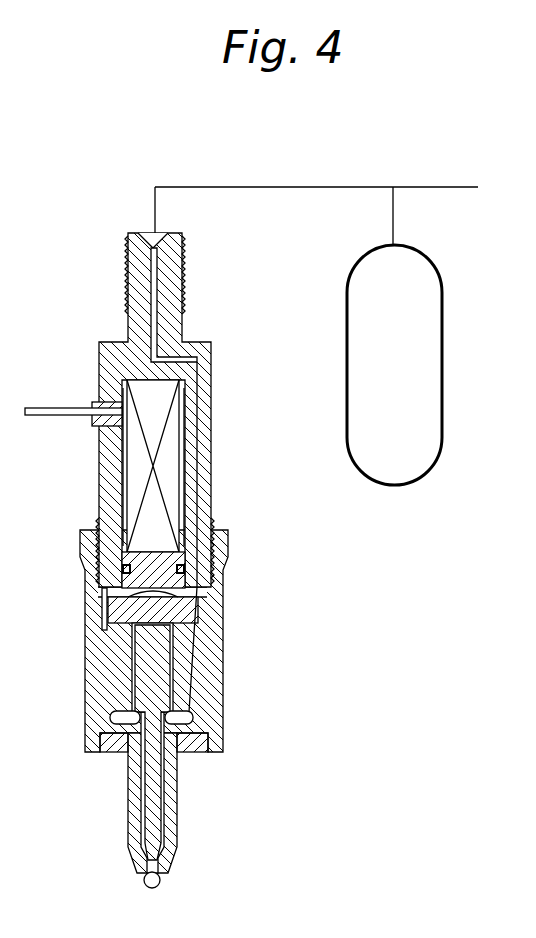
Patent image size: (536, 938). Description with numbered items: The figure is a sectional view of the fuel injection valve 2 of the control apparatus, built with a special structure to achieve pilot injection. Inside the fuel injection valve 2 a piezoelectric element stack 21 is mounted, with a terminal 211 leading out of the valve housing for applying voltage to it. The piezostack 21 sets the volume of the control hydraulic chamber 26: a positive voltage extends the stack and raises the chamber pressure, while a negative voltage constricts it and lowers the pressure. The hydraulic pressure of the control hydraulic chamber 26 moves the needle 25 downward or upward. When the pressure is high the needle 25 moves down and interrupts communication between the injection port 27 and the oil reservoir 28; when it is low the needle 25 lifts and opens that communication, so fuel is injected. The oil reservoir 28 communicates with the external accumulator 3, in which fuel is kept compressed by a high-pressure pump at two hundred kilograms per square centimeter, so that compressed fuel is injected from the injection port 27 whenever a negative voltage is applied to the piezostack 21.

The fuel injection valve 2 is at (172, 270).
The accumulator 3 is at (394, 365).
The piezoelectric element stack 21 is at (170, 467).
The terminal 211 is at (52, 408).
The needle 25 is at (155, 797).
The control hydraulic chamber 26 is at (178, 597).
The injection port 27 is at (145, 882).
The oil reservoir 28 is at (188, 718).